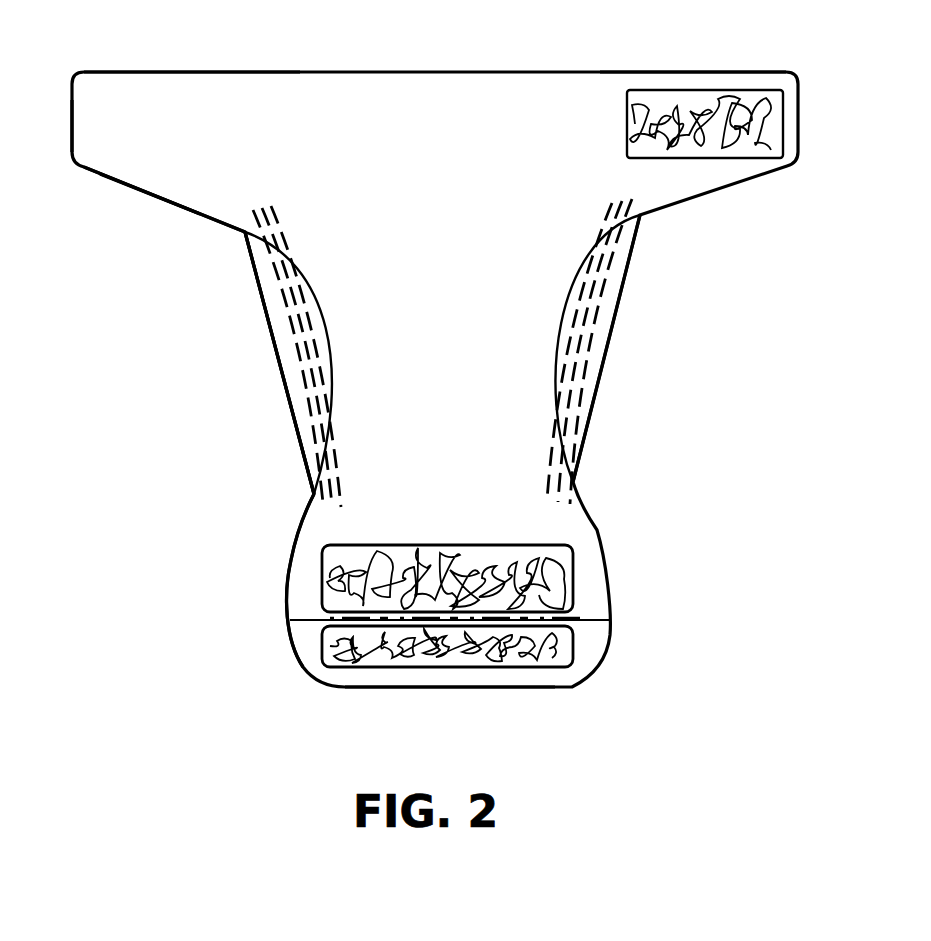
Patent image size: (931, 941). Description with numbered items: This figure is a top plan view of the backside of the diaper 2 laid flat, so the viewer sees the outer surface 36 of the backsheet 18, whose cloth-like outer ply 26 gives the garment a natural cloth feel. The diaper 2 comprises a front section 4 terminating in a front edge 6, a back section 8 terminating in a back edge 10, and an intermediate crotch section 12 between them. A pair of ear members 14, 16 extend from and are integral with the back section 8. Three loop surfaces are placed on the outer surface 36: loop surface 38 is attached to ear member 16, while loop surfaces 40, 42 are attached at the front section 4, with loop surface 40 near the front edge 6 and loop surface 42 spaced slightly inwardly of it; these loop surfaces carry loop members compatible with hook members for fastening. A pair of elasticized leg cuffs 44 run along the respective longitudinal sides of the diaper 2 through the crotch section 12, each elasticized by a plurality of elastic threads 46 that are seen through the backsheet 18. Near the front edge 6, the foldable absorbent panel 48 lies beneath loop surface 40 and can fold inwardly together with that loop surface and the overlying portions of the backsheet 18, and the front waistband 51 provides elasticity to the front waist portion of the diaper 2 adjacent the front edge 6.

The diaper 2 is at (163, 472).
The front section 4 is at (233, 662).
The front edge 6 is at (463, 690).
The back section 8 is at (100, 210).
The back edge 10 is at (562, 72).
The intermediate crotch section 12 is at (167, 365).
The ear member 14 is at (135, 93).
The ear member 16 is at (682, 72).
The backsheet 18 is at (483, 189).
The cloth-like outer ply 26 is at (483, 439).
The outer surface 36 is at (257, 152).
The loop surface 38 is at (738, 102).
The loop surface 40 is at (568, 657).
The loop surface 42 is at (572, 557).
The elasticized leg cuffs 44 is at (292, 380).
The elastic threads 46 is at (274, 216).
The foldable absorbent panel 48 is at (293, 715).
The front waistband 51 is at (630, 632).